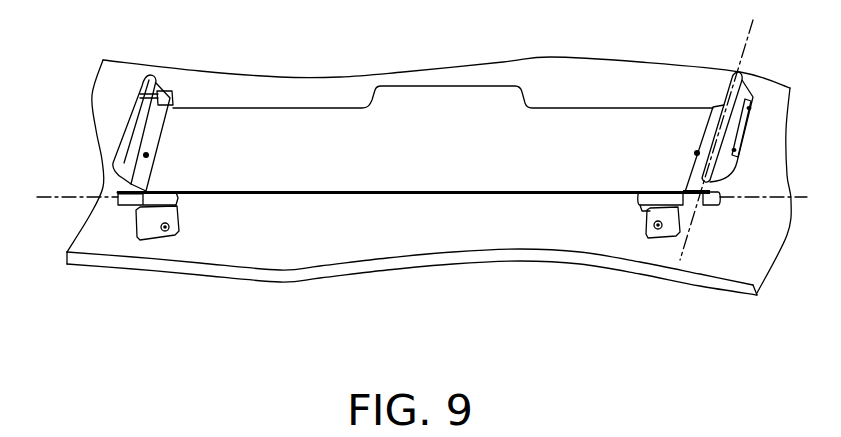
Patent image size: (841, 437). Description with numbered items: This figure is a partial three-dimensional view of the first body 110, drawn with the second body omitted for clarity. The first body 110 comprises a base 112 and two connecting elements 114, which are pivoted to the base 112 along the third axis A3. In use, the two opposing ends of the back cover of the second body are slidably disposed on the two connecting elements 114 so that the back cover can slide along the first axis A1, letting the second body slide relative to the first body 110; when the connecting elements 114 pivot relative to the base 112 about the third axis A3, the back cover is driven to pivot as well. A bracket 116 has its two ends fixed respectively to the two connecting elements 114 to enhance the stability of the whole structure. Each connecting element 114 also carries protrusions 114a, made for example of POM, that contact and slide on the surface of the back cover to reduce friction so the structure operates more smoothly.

The first body 110 is at (604, 282).
The base 112 is at (733, 263).
The connecting element 114 is at (129, 108).
The protrusion 114a is at (150, 154).
The bracket 116 is at (583, 133).
The first axis A1 is at (750, 32).
The third axis A3 is at (48, 193).